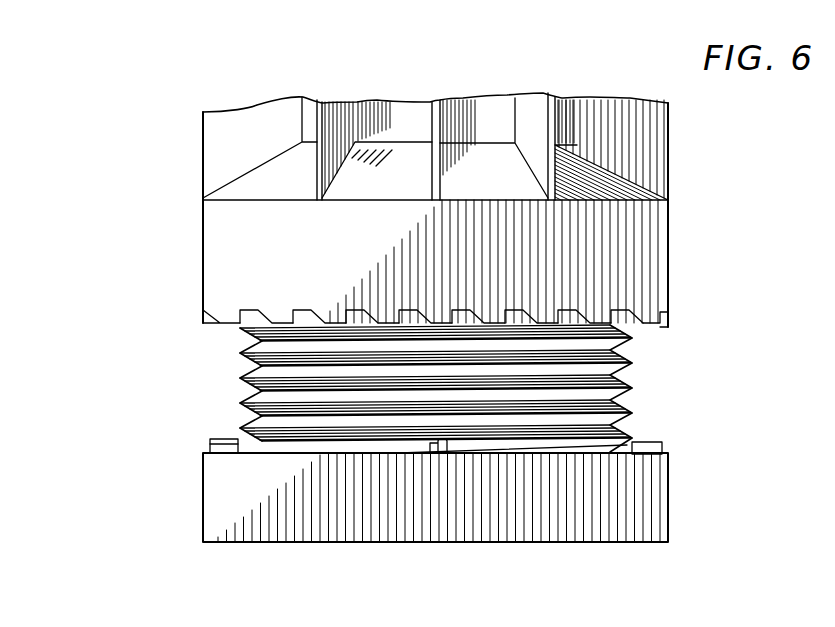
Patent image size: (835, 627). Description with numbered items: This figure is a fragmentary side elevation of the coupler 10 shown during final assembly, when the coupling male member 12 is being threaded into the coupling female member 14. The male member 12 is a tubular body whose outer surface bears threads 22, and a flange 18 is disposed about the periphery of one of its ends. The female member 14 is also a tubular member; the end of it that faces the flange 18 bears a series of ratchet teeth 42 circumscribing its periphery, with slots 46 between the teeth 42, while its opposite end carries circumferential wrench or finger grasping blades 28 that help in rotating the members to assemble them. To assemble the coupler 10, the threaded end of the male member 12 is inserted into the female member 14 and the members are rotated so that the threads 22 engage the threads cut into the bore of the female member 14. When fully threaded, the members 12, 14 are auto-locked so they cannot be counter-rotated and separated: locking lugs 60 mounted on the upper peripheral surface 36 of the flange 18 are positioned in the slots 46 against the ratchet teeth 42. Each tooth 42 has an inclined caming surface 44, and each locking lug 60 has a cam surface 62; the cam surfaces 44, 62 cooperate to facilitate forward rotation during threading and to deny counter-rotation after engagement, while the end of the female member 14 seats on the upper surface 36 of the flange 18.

The coupler 10 is at (158, 200).
The coupling male member 12 is at (600, 545).
The coupling female member 14 is at (277, 267).
The flange 18 is at (630, 488).
The threads 22 is at (632, 390).
The wrench or finger grasping blades 28 is at (627, 113).
The upper peripheral surface 36 is at (662, 449).
The ratchet teeth 42 is at (548, 328).
The inclined caming surface 44 is at (528, 315).
The slots 46 is at (615, 310).
The locking lugs 60 is at (210, 447).
The cam surfaces 62 is at (437, 542).